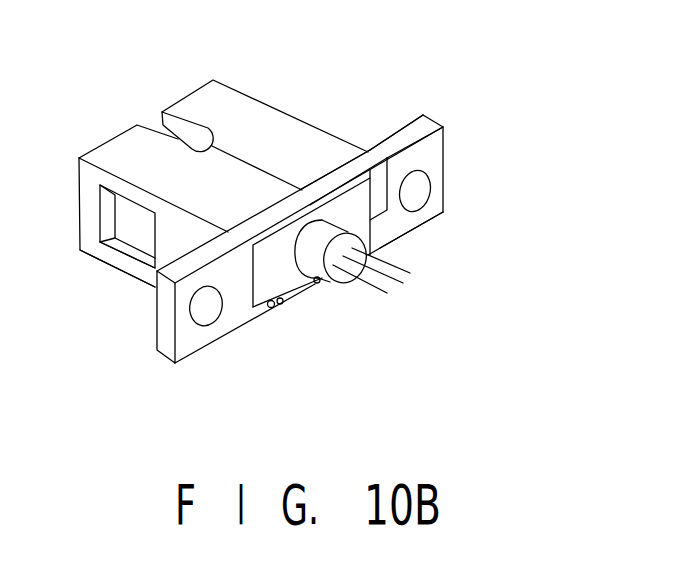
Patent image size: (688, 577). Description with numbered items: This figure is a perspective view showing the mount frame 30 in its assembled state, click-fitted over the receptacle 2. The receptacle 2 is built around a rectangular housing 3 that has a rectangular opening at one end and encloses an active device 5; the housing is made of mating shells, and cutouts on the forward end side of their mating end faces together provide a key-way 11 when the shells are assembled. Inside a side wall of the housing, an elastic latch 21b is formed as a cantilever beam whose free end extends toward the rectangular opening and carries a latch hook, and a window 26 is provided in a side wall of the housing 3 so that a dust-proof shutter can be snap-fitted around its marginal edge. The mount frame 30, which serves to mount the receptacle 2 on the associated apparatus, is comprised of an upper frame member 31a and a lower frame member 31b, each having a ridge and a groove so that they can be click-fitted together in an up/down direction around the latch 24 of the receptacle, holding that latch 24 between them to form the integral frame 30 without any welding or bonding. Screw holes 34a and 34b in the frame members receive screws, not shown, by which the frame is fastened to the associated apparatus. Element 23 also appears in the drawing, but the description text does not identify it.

The receptacle 2 is at (268, 97).
The housing 3 is at (121, 156).
The active device 5 is at (317, 278).
The key-way 11 is at (156, 119).
The elastic latch 21b is at (147, 220).
The base plate 23 is at (218, 357).
The latch 24 is at (281, 278).
The window 26 is at (137, 262).
The mount frame 30 is at (388, 126).
The upper frame member 31a is at (334, 173).
The lower frame member 31b is at (408, 218).
The screw hole 34a is at (193, 316).
The screw hole 34b is at (424, 185).